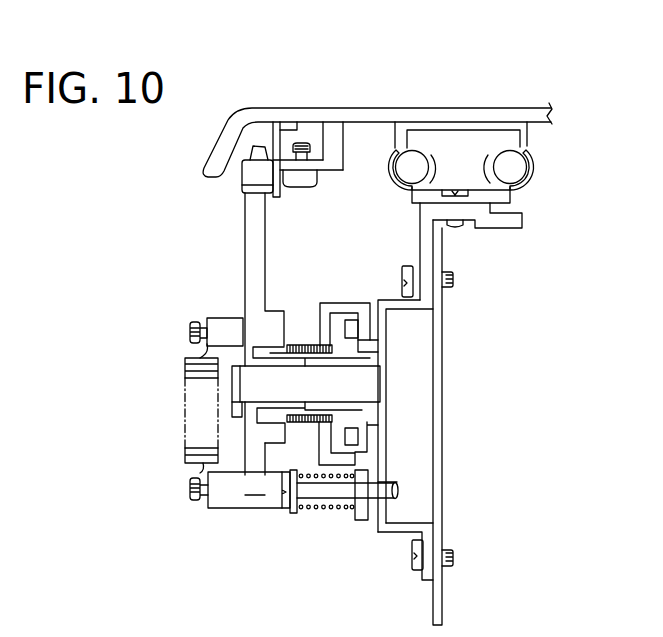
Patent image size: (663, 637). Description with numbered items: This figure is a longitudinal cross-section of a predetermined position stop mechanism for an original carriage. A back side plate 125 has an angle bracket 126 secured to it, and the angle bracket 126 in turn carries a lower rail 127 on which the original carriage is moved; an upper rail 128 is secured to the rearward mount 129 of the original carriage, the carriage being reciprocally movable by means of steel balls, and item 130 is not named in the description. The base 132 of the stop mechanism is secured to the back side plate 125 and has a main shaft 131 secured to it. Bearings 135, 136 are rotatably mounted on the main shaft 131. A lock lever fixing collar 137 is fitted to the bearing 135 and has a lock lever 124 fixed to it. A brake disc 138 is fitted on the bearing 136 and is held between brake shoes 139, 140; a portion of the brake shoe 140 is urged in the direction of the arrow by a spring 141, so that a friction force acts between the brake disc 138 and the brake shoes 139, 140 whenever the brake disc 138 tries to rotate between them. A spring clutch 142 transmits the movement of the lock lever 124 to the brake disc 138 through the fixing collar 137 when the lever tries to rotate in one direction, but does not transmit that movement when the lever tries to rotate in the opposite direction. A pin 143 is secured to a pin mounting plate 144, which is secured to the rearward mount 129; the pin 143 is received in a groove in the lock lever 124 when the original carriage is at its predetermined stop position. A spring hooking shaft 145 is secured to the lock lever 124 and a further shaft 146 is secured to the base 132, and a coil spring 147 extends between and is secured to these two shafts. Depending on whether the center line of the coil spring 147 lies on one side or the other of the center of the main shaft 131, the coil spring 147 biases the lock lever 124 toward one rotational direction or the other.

The lock lever 124 is at (252, 279).
The back side plate 125 is at (442, 380).
The angle bracket 126 is at (494, 226).
The lower rail 127 is at (510, 192).
The upper rail 128 is at (522, 140).
The rearward mount 129 is at (390, 109).
The rollers 130 is at (506, 165).
The main shaft 131 is at (356, 380).
The base 132 is at (393, 534).
The bearing 135 is at (288, 368).
The bearing 136 is at (362, 358).
The lock lever fixing collar 137 is at (273, 350).
The brake disc 138 is at (340, 323).
The brake shoe 139 is at (372, 428).
The brake shoe 140 is at (330, 302).
The spring 141 is at (352, 540).
The spring clutch 142 is at (390, 384).
The pin 143 is at (250, 178).
The pin mounting plate 144 is at (289, 162).
The spring hooking shaft 145 is at (192, 333).
The shaft 146 is at (227, 498).
The coil spring 147 is at (188, 425).